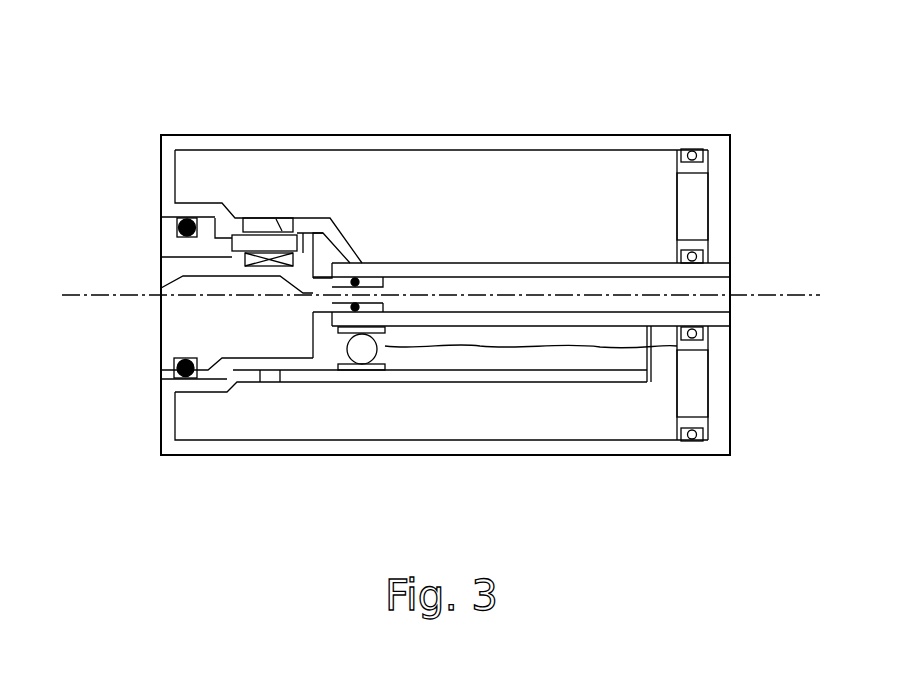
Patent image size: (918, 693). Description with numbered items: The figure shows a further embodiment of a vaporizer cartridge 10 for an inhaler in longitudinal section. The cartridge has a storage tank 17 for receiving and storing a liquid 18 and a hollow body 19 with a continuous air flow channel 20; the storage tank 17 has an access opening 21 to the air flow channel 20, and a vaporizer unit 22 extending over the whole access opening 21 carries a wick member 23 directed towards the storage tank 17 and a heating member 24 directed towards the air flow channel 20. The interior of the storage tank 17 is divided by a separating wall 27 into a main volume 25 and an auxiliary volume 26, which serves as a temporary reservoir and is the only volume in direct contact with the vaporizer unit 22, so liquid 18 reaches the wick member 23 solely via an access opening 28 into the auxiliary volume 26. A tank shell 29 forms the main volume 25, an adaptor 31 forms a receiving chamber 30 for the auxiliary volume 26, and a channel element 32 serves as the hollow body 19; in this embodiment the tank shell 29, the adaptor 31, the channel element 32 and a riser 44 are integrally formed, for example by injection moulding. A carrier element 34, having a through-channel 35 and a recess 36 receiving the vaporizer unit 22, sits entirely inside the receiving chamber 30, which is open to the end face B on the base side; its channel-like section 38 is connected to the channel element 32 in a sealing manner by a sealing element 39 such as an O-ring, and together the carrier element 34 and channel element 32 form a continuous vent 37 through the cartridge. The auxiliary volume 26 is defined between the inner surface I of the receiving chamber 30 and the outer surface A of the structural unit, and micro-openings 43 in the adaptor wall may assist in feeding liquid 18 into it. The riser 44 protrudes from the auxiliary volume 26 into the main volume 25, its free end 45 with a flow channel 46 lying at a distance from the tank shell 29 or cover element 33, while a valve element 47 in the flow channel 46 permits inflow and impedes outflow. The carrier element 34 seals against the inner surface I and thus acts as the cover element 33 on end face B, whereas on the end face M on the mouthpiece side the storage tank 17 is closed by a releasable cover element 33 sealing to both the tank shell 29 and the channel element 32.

The vaporizer cartridge 10 is at (700, 108).
The storage tank 17 is at (525, 168).
The liquid 18 is at (612, 384).
The hollow body 19 is at (570, 257).
The air flow channel 20 is at (545, 349).
The access opening 21 is at (312, 232).
The vaporizer unit 22 is at (283, 218).
The wick member 23 is at (178, 227).
The heating member 24 is at (262, 260).
The main volume 25 is at (513, 221).
The auxiliary volume 26 is at (352, 275).
The separating wall 27 is at (320, 384).
The access opening 28 is at (268, 218).
The tank shell 29 is at (468, 143).
The receiving chamber 30 is at (235, 367).
The adaptor 31 is at (222, 205).
The channel element 32 is at (612, 270).
The cover element 33 is at (735, 400).
The carrier element 34 is at (265, 335).
The through-channel 35 is at (332, 318).
The recess 36 is at (300, 280).
The vent 37 is at (690, 290).
The channel-like section 38 is at (388, 306).
The sealing element 39 is at (358, 277).
The micro-openings 43 is at (270, 384).
The riser 44 is at (487, 388).
The free end 45 is at (643, 395).
The flow channel 46 is at (585, 356).
The valve element 47 is at (365, 366).
The outer surface A is at (333, 262).
The end face on the base side B is at (108, 183).
The inner surface I is at (342, 250).
The end face on the mouthpiece side M is at (770, 212).